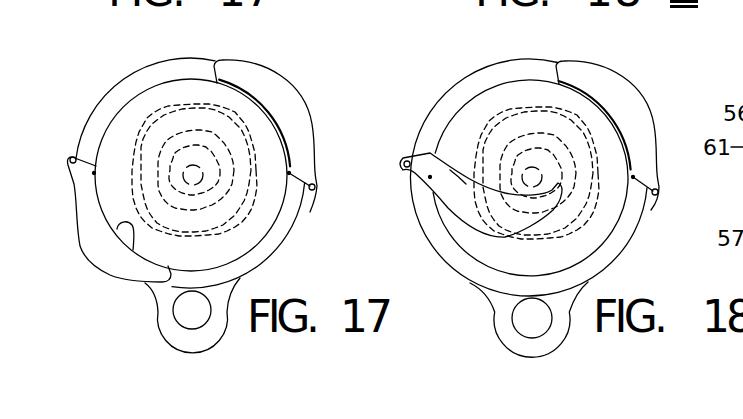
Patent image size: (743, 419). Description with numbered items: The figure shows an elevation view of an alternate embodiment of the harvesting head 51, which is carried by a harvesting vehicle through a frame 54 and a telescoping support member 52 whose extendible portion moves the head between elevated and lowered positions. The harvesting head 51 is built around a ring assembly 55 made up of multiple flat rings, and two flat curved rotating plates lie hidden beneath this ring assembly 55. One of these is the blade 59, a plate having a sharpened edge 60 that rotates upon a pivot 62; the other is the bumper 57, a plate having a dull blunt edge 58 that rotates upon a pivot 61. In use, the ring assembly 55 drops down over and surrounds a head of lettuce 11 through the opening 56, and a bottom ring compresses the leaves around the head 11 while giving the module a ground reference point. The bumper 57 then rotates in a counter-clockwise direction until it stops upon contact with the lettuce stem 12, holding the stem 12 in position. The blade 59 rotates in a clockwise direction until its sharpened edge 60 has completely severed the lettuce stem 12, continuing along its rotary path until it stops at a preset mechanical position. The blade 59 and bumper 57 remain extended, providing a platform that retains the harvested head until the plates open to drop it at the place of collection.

In FIG. 17, the head of lettuce 11 is at (130, 113).
In FIG. 18, the head of lettuce 11 is at (500, 120).
In FIG. 17, the lettuce stem 12 is at (235, 247).
In FIG. 18, the lettuce stem 12 is at (553, 237).
In FIG. 17, the harvesting head 51 is at (73, 285).
In FIG. 18, the harvesting head 51 is at (630, 51).
In FIG. 17, the telescoping support member 52 is at (192, 312).
In FIG. 18, the telescoping support member 52 is at (533, 330).
In FIG. 17, the frame 54 is at (157, 324).
In FIG. 18, the frame 54 is at (497, 336).
In FIG. 17, the ring assembly 55 is at (177, 73).
In FIG. 18, the ring assembly 55 is at (629, 218).
In FIG. 17, the opening 56 is at (127, 118).
In FIG. 18, the opening 56 is at (542, 83).
In FIG. 17, the bumper plate 57 is at (85, 223).
In FIG. 18, the bumper plate 57 is at (459, 203).
In FIG. 17, the dull blunt edge 58 is at (132, 248).
In FIG. 18, the dull blunt edge 58 is at (458, 182).
In FIG. 17, the blade plate 59 is at (300, 117).
In FIG. 18, the blade plate 59 is at (640, 112).
In FIG. 17, the sharpened edge 60 is at (236, 96).
In FIG. 18, the sharpened edge 60 is at (633, 150).
In FIG. 17, the pivot 61 is at (70, 157).
In FIG. 18, the pivot 61 is at (404, 162).
In FIG. 17, the pivot 62 is at (313, 201).
In FIG. 18, the pivot 62 is at (660, 193).